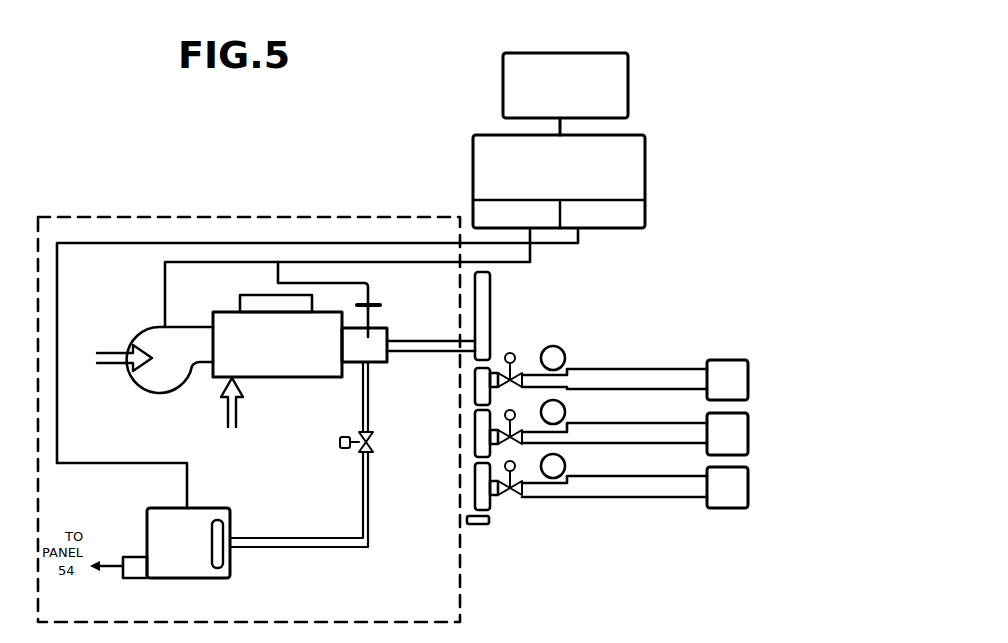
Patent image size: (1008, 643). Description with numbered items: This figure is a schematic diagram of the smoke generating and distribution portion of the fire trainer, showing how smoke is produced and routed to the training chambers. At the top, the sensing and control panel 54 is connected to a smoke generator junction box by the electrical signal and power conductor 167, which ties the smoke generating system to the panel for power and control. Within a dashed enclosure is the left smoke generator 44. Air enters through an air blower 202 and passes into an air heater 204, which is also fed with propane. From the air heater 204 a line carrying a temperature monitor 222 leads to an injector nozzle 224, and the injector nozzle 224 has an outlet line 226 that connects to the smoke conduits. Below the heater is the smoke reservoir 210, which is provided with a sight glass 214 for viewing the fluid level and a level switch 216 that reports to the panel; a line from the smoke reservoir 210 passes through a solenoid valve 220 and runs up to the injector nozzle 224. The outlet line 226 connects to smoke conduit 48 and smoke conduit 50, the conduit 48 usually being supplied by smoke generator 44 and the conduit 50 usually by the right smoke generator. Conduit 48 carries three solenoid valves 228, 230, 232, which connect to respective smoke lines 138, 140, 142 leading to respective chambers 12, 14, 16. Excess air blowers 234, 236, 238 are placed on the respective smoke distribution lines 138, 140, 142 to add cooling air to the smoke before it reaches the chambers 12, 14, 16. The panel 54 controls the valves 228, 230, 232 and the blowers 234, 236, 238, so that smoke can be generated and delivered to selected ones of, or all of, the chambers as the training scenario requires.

The sensing and control panel 54 is at (605, 53).
The electrical signal and power conductor 167 is at (562, 126).
The left smoke generator 44 is at (268, 208).
The air blower 202 is at (148, 392).
The air heater 204 is at (266, 380).
The temperature monitor 222 is at (374, 303).
The injector nozzle 224 is at (377, 364).
The outlet line 226 is at (445, 313).
The solenoid valve 220 is at (352, 447).
The smoke reservoir 210 is at (187, 570).
The sight glass 214 is at (222, 563).
The level switch 216 is at (138, 579).
The smoke conduit 50 is at (490, 295).
The smoke conduit 48 is at (492, 507).
The solenoid valve 228 is at (560, 328).
The solenoid valve 230 is at (516, 379).
The solenoid valve 232 is at (508, 436).
The excess air blower 234 is at (560, 348).
The excess air blower 236 is at (563, 410).
The excess air blower 238 is at (573, 458).
The smoke line 138 is at (640, 369).
The smoke line 140 is at (663, 405).
The smoke line 142 is at (628, 498).
The chamber 12 is at (749, 368).
The chamber 14 is at (749, 425).
The chamber 16 is at (749, 485).